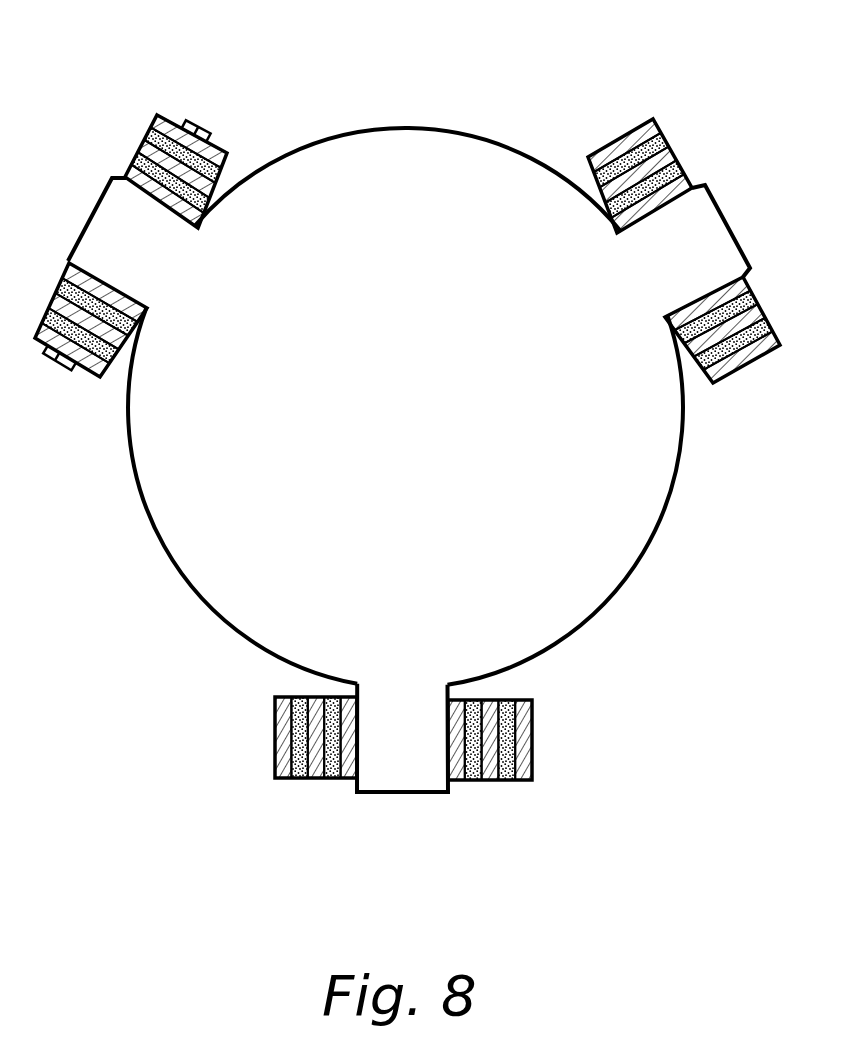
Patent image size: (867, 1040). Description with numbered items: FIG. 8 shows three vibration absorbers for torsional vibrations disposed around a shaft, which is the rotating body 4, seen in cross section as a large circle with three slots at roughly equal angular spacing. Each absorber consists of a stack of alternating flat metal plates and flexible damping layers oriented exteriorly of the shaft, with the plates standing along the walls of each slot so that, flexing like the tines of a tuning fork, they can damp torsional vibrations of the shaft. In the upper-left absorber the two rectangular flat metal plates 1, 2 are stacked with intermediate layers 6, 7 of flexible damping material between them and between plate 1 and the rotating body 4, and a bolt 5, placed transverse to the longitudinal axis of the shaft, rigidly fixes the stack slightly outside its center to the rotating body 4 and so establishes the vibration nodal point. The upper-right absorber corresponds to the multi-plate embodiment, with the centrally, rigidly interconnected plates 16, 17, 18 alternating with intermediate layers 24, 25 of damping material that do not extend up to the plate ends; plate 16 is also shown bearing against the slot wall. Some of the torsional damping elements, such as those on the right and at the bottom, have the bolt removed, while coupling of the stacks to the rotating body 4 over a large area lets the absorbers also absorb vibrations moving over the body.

The metal plate 1 is at (150, 114).
The metal plate 2 is at (168, 115).
The rotating body 4 is at (107, 206).
The bolt 5 is at (202, 125).
The intermediate layer 6 is at (130, 173).
The intermediate layer 7 is at (152, 125).
The plate 16 is at (118, 176).
The plate 17 is at (672, 152).
The plate 18 is at (657, 120).
The intermediate layer 24 is at (680, 172).
The intermediate layer 25 is at (667, 135).